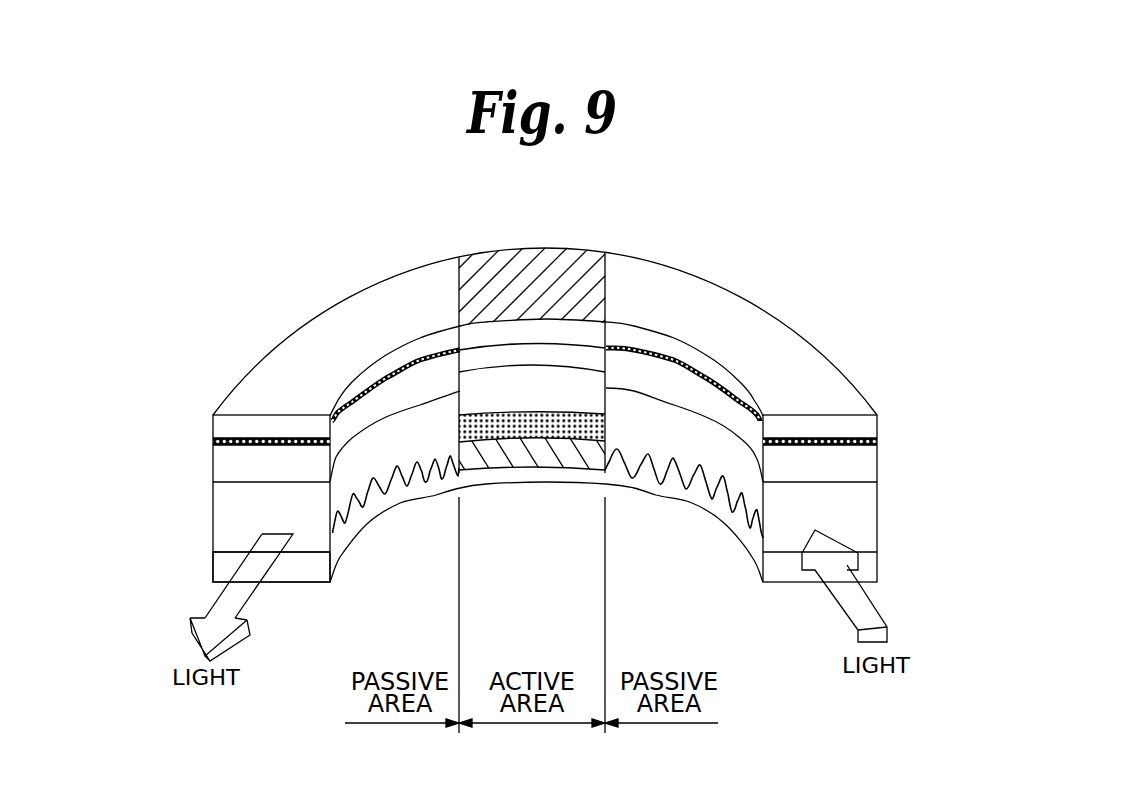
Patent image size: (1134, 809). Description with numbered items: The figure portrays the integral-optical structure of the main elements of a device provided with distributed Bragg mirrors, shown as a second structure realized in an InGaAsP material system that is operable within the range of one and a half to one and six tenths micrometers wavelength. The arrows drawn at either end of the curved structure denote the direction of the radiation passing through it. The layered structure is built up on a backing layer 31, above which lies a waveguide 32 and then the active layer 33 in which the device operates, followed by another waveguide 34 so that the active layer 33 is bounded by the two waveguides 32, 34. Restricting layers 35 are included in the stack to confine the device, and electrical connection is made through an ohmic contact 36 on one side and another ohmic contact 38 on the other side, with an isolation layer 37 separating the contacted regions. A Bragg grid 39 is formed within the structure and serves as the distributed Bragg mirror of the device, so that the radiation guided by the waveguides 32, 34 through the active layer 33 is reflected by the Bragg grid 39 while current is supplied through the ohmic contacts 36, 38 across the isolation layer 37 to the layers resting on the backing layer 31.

The backing layer 31 is at (593, 478).
The waveguide 32 is at (563, 473).
The active layer 33 is at (512, 433).
The another waveguide 34 is at (417, 432).
The restricting layers 35 is at (367, 403).
The ohmic contact 36 is at (303, 585).
The isolation layer 37 is at (732, 383).
The another ohmic contact 38 is at (580, 262).
The Bragg grid 39 is at (685, 470).